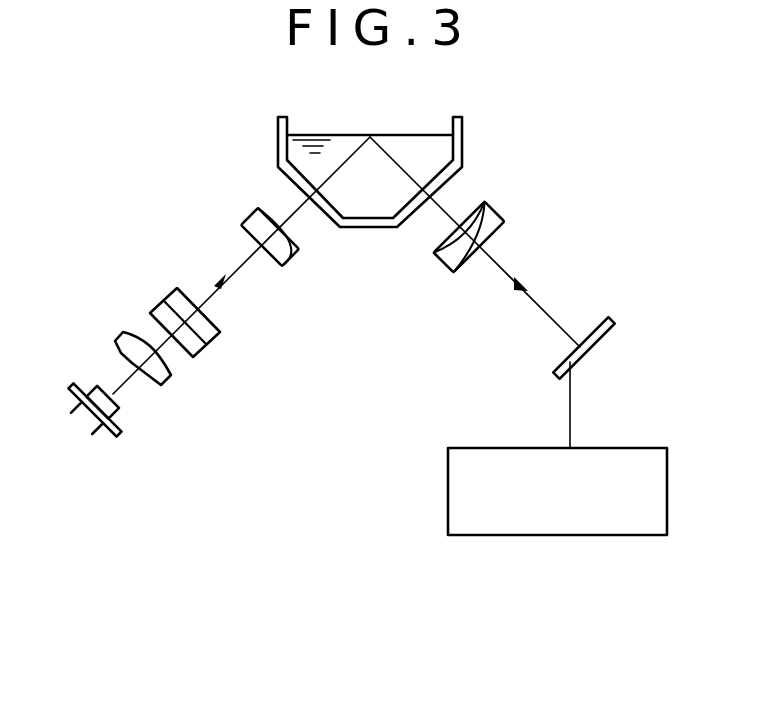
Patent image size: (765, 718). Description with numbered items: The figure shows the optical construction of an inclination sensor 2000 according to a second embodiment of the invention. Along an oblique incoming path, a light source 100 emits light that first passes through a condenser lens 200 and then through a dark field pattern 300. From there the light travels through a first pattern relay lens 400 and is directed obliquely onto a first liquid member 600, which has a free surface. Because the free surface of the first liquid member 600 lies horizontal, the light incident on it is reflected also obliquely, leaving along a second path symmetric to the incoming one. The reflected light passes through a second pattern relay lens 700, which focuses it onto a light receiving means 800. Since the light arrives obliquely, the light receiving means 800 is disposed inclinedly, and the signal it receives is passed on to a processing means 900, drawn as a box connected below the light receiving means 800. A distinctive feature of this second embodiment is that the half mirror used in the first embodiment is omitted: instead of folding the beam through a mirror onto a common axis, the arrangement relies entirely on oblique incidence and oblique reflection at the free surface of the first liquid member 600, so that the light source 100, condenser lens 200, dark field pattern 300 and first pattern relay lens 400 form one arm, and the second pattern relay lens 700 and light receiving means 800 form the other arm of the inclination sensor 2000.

The light source 100 is at (119, 411).
The condenser lens 200 is at (168, 364).
The dark field pattern 300 is at (174, 292).
The first pattern relay lens 400 is at (256, 212).
The first liquid member 600 is at (410, 133).
The second pattern relay lens 700 is at (497, 205).
The light receiving means 800 is at (598, 322).
The processing means 900 is at (627, 448).
The inclination sensor 2000 is at (363, 318).